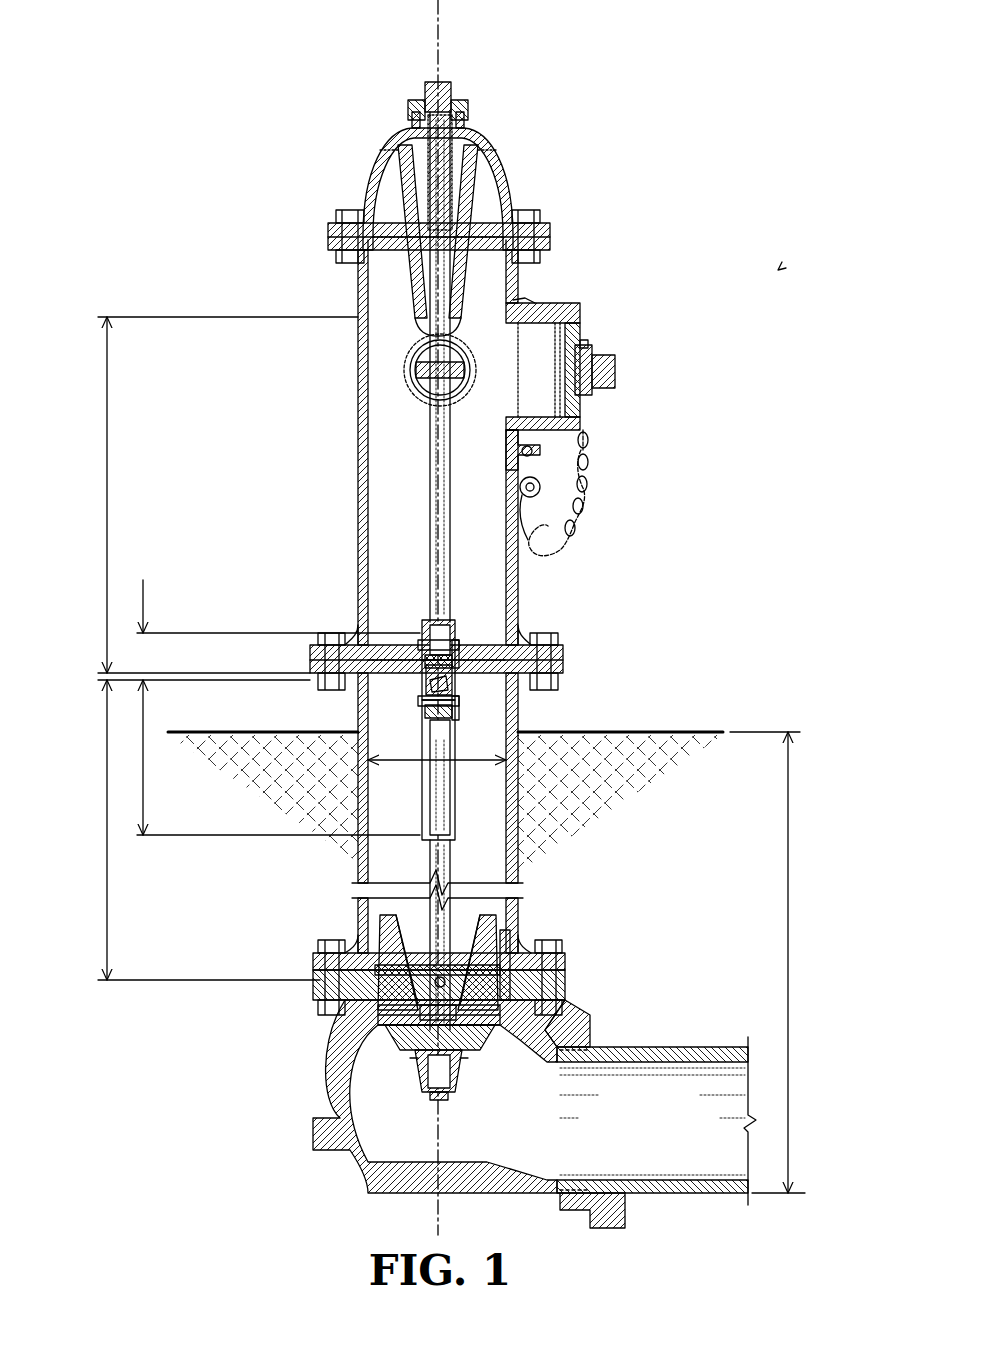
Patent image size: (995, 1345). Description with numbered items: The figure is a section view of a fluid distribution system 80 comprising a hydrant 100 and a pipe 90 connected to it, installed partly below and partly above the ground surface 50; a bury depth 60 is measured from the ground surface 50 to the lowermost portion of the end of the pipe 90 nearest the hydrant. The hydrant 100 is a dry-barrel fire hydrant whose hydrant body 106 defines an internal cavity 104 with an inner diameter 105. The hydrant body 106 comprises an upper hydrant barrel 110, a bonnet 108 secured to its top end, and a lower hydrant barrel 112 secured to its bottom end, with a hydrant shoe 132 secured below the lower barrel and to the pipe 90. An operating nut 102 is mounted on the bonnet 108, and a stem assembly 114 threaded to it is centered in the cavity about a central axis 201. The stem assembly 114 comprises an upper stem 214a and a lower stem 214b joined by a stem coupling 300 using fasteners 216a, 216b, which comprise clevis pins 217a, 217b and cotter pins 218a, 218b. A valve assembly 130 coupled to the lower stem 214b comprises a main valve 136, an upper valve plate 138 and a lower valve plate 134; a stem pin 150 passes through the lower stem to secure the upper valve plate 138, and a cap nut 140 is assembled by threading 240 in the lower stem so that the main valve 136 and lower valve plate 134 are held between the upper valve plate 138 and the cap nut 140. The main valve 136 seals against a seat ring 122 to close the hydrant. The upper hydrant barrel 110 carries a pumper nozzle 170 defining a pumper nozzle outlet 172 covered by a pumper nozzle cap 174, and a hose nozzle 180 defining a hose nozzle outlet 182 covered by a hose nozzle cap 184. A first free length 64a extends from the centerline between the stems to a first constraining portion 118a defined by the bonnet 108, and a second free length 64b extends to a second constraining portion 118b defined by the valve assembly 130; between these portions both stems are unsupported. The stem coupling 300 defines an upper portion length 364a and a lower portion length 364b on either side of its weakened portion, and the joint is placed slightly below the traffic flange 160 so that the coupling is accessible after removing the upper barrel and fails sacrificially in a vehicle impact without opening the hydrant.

The fluid distribution system 80 is at (781, 270).
The central axis 201 is at (436, 33).
The bonnet 108 is at (378, 156).
The operating nut 102 is at (445, 84).
The internal cavity 104 is at (452, 500).
The hydrant 100 is at (362, 322).
The upper hydrant barrel 110 is at (360, 322).
The pumper nozzle 170 is at (566, 308).
The first constraining portion 118a is at (513, 308).
The pumper nozzle outlet 172 is at (578, 372).
The pumper nozzle cap 174 is at (597, 352).
The stem assembly 114 is at (452, 496).
The hose nozzle 180 is at (364, 378).
The hose nozzle outlet 182 is at (364, 360).
The hose nozzle cap 184 is at (420, 376).
The traffic flange 160 is at (558, 676).
The upper stem 214a is at (432, 455).
The hydrant body 106 is at (423, 655).
The fastener 216a is at (425, 650).
The clevis pin 217a is at (425, 664).
The cotter pin 218a is at (465, 662).
The stem coupling 300 is at (460, 678).
The fastener 216b is at (425, 700).
The cotter pin 218b is at (458, 705).
The clevis pin 217b is at (456, 702).
The lower stem 214b is at (430, 820).
The ground surface 50 is at (686, 732).
The lower hydrant barrel 112 is at (358, 860).
The inner diameter 105 is at (368, 770).
The upper valve plate 138 is at (345, 975).
The valve assembly 130 is at (478, 1055).
The stem pin 150 is at (452, 962).
The seat ring 122 is at (548, 955).
The second constraining portion 118b is at (556, 1010).
The main valve 136 is at (372, 1016).
The lower valve plate 134 is at (392, 1050).
The threading 240 is at (440, 1088).
The cap nut 140 is at (437, 1100).
The hydrant shoe 132 is at (350, 1160).
The pipe 90 is at (690, 1047).
The first free length 64a is at (203, 495).
The upper portion length 364a is at (145, 652).
The second free length 64b is at (184, 830).
The lower portion length 364b is at (143, 752).
The bury depth 60 is at (779, 962).